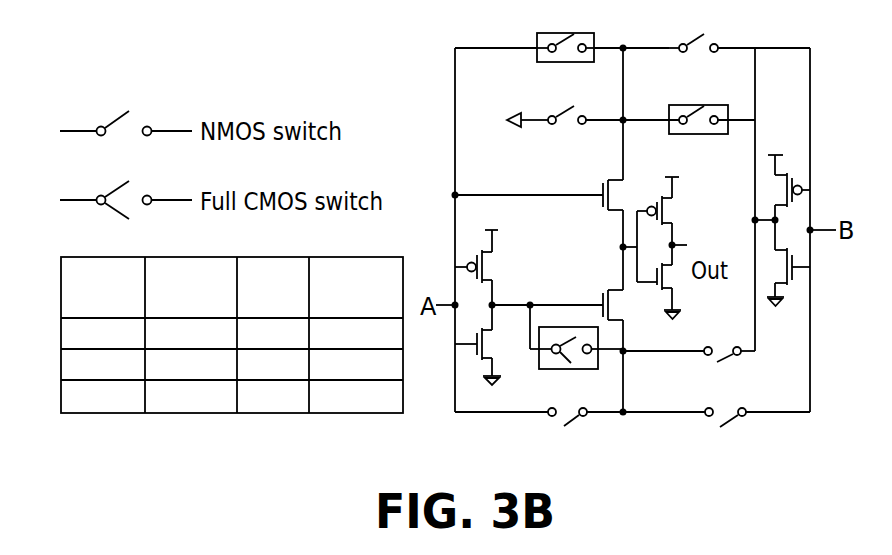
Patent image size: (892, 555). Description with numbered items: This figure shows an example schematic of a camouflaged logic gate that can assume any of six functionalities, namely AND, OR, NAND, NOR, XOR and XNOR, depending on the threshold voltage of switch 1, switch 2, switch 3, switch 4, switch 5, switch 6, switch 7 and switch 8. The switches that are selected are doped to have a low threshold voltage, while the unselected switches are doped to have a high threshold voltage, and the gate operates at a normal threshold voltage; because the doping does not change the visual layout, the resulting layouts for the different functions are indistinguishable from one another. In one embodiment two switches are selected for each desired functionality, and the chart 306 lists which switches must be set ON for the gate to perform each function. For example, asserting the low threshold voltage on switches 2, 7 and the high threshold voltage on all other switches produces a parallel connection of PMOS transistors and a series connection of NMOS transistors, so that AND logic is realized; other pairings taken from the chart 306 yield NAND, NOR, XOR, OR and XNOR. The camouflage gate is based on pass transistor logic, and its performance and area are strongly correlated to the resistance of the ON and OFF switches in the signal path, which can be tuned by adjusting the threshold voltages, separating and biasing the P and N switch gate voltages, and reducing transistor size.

The switch 1 is at (577, 402).
The switch 2 is at (574, 360).
The switch 3 is at (565, 133).
The switch 4 is at (565, 63).
The switch 5 is at (735, 402).
The switch 6 is at (689, 339).
The switch 7 is at (689, 136).
The switch 8 is at (693, 65).
The chart 306 is at (237, 414).